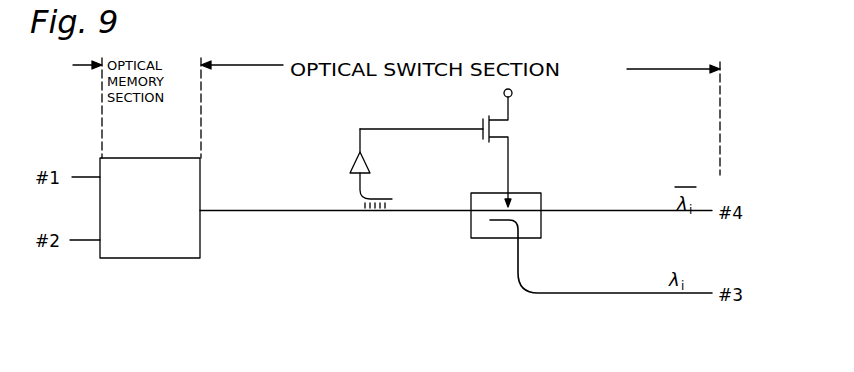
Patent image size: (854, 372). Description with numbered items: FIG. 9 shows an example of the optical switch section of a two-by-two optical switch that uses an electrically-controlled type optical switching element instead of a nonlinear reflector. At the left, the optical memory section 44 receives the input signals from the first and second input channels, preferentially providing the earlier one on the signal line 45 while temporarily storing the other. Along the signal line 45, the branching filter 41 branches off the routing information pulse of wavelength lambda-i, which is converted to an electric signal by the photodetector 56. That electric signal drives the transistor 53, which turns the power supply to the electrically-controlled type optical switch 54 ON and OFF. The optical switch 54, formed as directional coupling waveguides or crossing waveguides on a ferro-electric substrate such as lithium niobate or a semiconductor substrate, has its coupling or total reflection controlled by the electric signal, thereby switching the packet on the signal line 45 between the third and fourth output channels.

The branching filter 41 is at (376, 217).
The optical memory section 44 is at (153, 158).
The signal line 45 is at (233, 216).
The transistor 53 is at (483, 123).
The electrically-controlled type optical switch 54 is at (537, 193).
The photodetector 56 is at (370, 165).